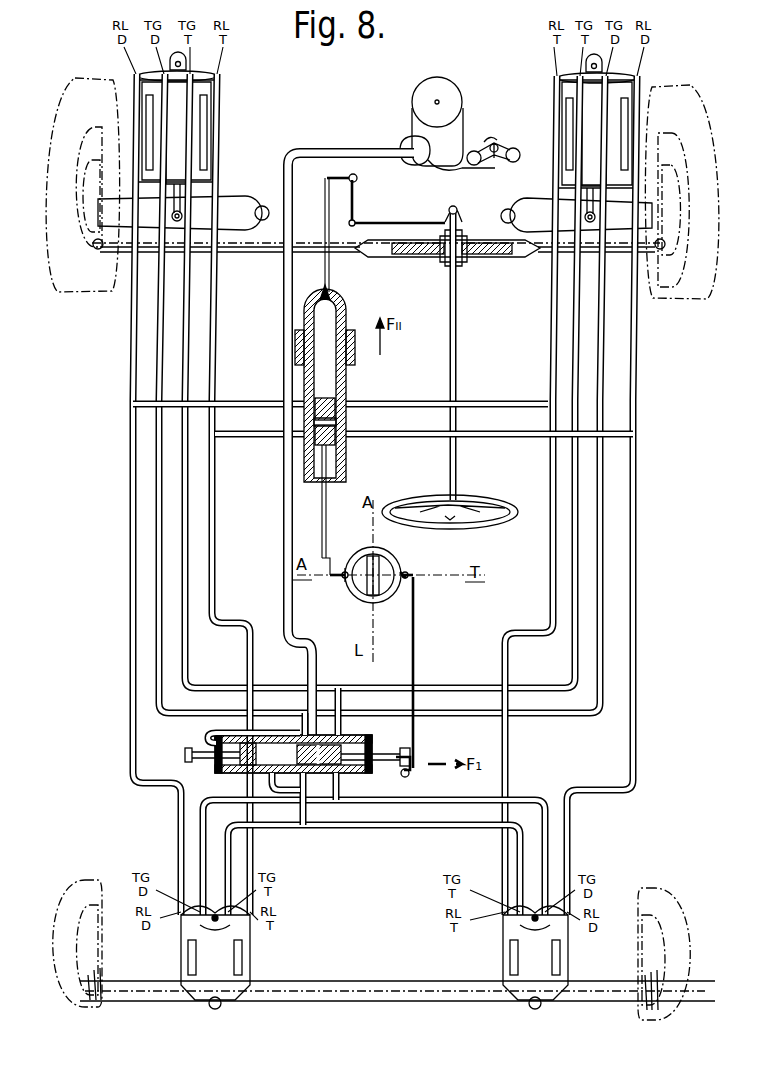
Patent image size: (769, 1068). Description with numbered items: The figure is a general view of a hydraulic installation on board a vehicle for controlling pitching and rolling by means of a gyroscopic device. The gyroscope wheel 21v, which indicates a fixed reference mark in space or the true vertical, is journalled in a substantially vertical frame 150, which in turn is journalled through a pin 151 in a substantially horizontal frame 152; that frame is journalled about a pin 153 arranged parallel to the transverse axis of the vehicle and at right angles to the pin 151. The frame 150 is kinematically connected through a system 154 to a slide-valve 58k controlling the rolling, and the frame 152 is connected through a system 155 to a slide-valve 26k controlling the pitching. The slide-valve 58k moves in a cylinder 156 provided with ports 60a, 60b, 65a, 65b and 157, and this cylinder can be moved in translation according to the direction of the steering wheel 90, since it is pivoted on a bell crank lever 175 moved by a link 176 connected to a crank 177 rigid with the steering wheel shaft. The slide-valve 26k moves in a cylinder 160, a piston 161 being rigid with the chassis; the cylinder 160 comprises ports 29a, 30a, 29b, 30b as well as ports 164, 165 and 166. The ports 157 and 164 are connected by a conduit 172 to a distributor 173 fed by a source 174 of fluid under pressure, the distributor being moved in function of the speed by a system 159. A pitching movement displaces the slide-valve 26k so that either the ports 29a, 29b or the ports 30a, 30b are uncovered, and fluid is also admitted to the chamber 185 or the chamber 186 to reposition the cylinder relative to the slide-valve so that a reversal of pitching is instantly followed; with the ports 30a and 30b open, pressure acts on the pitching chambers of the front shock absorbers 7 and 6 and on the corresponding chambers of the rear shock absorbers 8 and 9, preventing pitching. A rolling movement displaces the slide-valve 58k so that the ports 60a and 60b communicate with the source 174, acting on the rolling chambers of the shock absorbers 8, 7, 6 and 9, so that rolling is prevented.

The shock absorber 6 is at (600, 115).
The shock absorber 7 is at (175, 113).
The shock absorber 8 is at (534, 958).
The shock absorber 9 is at (216, 955).
The gyroscope wheel 21v is at (380, 575).
The slide-valve 26k is at (342, 742).
The port 29a is at (304, 732).
The port 29b is at (305, 790).
The port 30a is at (343, 744).
The port 30b is at (340, 790).
The slide-valve 58k is at (340, 428).
The port 60a is at (316, 402).
The port 60b is at (336, 408).
The port 65a is at (310, 440).
The port 65b is at (340, 444).
The steering wheel 90 is at (460, 497).
The frame 150 is at (378, 566).
The pin 151 is at (382, 618).
The frame 152 is at (358, 555).
The pin 153 is at (408, 572).
The system 154 is at (330, 560).
The system 155 is at (415, 638).
The cylinder 156 is at (329, 296).
The port 157 is at (300, 424).
The system 159 is at (494, 146).
The cylinder 160 is at (240, 770).
The piston 161 is at (195, 753).
The port 164 is at (322, 742).
The port 165 is at (280, 735).
The port 166 is at (352, 772).
The conduit 172 is at (285, 277).
The distributor 173 is at (425, 148).
The source of fluid under pressure 174 is at (437, 97).
The bell crank lever 175 is at (357, 231).
The link 176 is at (400, 226).
The crank 177 is at (448, 212).
The chamber 185 is at (270, 778).
The chamber 186 is at (222, 760).